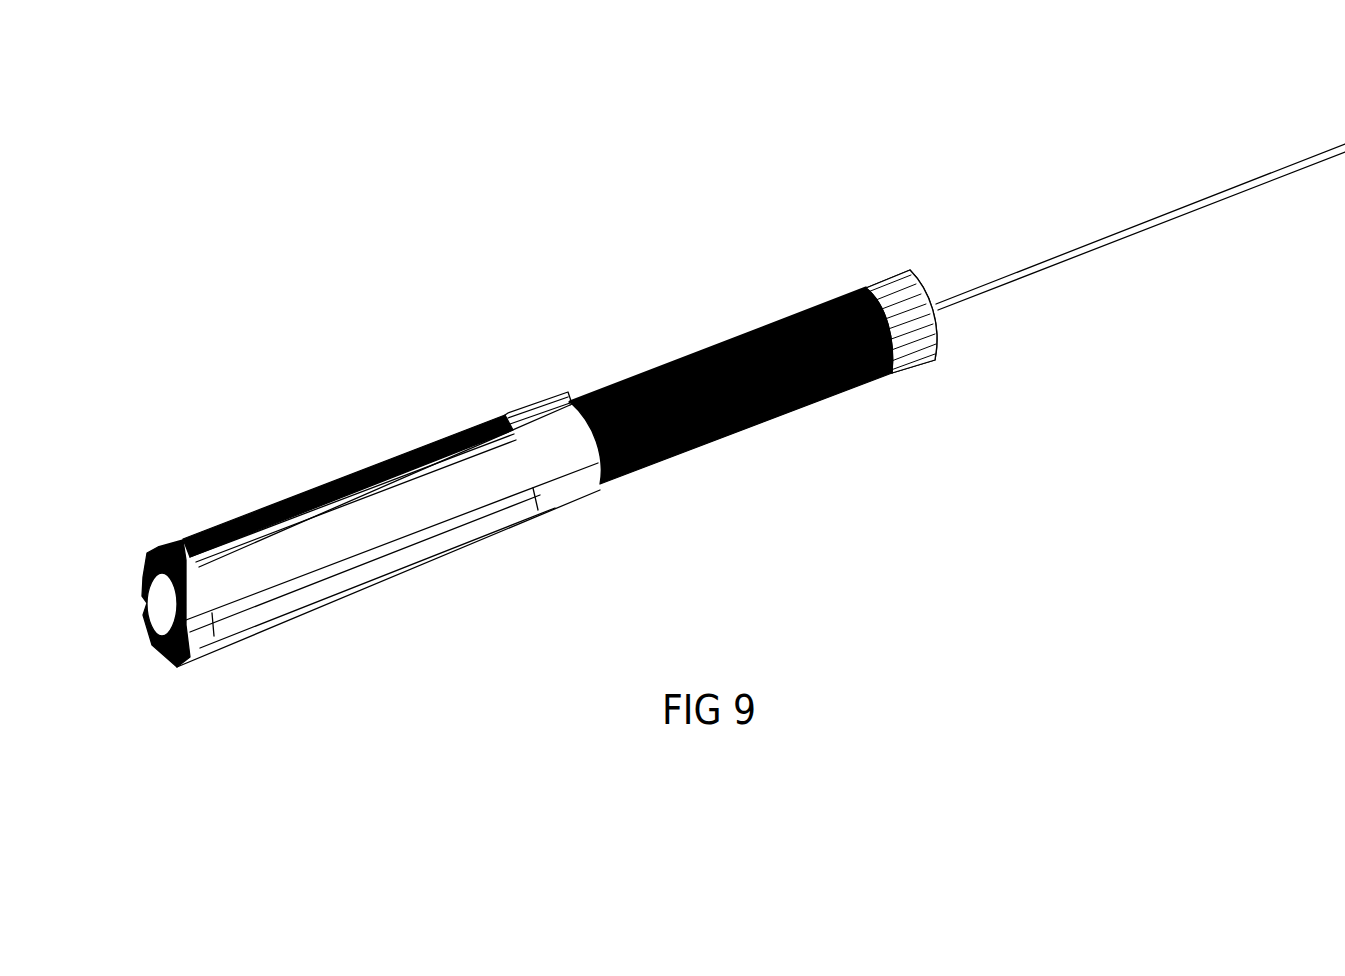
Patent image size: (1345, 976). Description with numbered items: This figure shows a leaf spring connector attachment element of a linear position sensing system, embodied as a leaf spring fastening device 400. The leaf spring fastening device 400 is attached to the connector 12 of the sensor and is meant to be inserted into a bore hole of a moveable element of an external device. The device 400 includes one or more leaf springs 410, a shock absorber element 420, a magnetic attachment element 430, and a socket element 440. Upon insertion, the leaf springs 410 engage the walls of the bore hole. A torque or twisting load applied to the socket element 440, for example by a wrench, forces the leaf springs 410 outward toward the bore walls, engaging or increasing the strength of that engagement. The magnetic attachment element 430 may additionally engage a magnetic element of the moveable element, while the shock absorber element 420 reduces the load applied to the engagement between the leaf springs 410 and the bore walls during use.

The leaf spring fastening device 400 is at (753, 38).
The leaf springs 410 is at (409, 540).
The shock absorber element 420 is at (721, 337).
The magnetic attachment element 430 is at (912, 373).
The socket element 440 is at (876, 282).
The connector 12 is at (1108, 234).